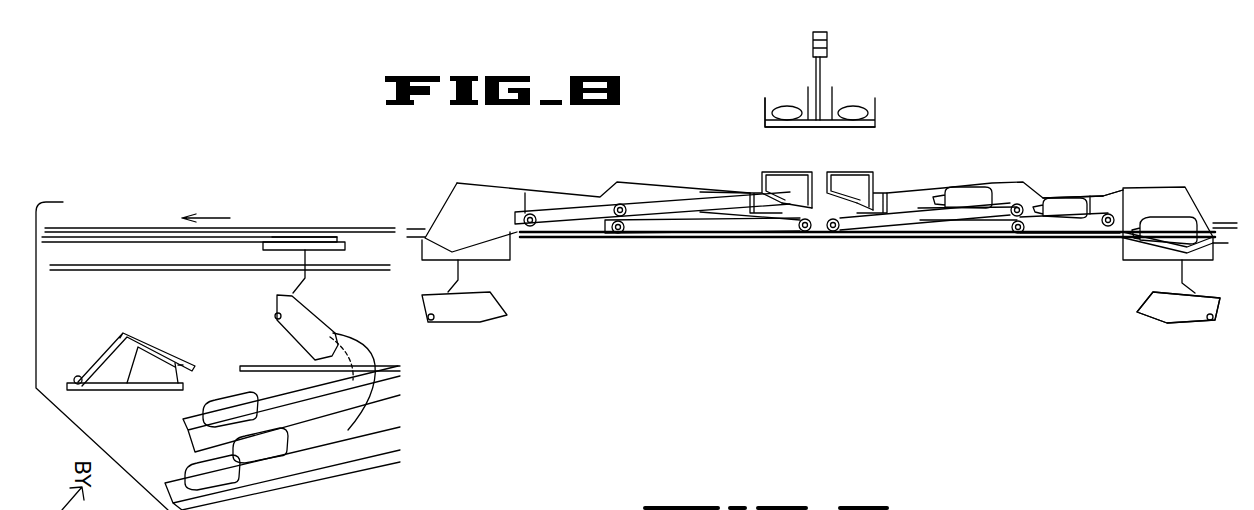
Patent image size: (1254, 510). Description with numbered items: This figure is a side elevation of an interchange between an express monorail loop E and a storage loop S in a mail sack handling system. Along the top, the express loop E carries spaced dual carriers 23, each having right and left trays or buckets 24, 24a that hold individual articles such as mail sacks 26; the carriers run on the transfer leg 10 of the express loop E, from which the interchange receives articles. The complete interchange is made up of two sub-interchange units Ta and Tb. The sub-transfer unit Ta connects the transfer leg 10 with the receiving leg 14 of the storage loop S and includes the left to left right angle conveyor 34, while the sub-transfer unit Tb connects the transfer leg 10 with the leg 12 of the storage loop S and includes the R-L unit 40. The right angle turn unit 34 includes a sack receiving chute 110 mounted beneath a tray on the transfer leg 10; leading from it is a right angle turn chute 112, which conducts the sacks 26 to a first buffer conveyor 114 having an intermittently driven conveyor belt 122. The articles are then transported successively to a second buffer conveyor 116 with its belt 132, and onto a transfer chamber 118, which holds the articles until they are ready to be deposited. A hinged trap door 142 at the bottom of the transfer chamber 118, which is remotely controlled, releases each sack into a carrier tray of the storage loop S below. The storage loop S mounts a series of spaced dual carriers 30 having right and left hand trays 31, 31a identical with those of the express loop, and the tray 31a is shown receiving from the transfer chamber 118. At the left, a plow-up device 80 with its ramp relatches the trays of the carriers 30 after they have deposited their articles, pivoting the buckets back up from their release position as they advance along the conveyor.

The storage loop S is at (277, 220).
The plow-up device 80 is at (97, 336).
The dual carrier 30 is at (260, 310).
The tray 31a is at (320, 326).
The tray 31 is at (1160, 312).
The mail sack 26 is at (277, 437).
The express loop E is at (790, 41).
The transfer leg 10 is at (830, 34).
The dual carrier 23 is at (797, 65).
The tray 24 is at (877, 98).
The tray 24a is at (763, 110).
The sub-transfer unit Tb is at (640, 173).
The sub-transfer unit Ta is at (989, 160).
The leg of storage loop 12 is at (723, 232).
The receiving leg of storage loop 14 is at (910, 237).
The R-L unit 40 is at (745, 160).
The left to left right angle conveyor 34 is at (889, 162).
The sack receiving chute 110 is at (867, 177).
The right angle turn chute 112 is at (817, 187).
The first buffer conveyor 114 is at (943, 188).
The second buffer conveyor 116 is at (1090, 196).
The transfer chamber 118 is at (1118, 178).
The conveyor belt 122 is at (917, 210).
The belt 132 is at (1048, 240).
The hinged trap door 142 is at (1158, 247).